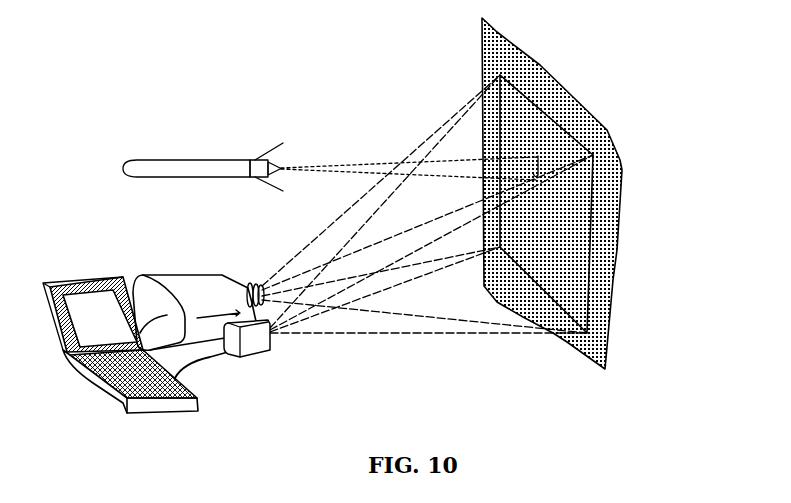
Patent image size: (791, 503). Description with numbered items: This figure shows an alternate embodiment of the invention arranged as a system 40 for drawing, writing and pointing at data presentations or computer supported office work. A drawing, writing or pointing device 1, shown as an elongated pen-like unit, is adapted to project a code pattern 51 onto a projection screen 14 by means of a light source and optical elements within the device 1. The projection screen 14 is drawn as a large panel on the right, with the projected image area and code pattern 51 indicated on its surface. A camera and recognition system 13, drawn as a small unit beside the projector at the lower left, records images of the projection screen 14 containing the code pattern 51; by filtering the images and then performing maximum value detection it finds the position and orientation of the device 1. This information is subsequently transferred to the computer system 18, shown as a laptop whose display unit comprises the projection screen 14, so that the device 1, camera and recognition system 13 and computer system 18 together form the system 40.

The drawing, writing or pointing device 1 is at (200, 160).
The camera and recognition system 13 is at (255, 330).
The projection screen 14 is at (616, 230).
The computer system 18 is at (107, 297).
The system for drawing, writing and pointing 40 is at (232, 396).
The code pattern 51 is at (480, 97).